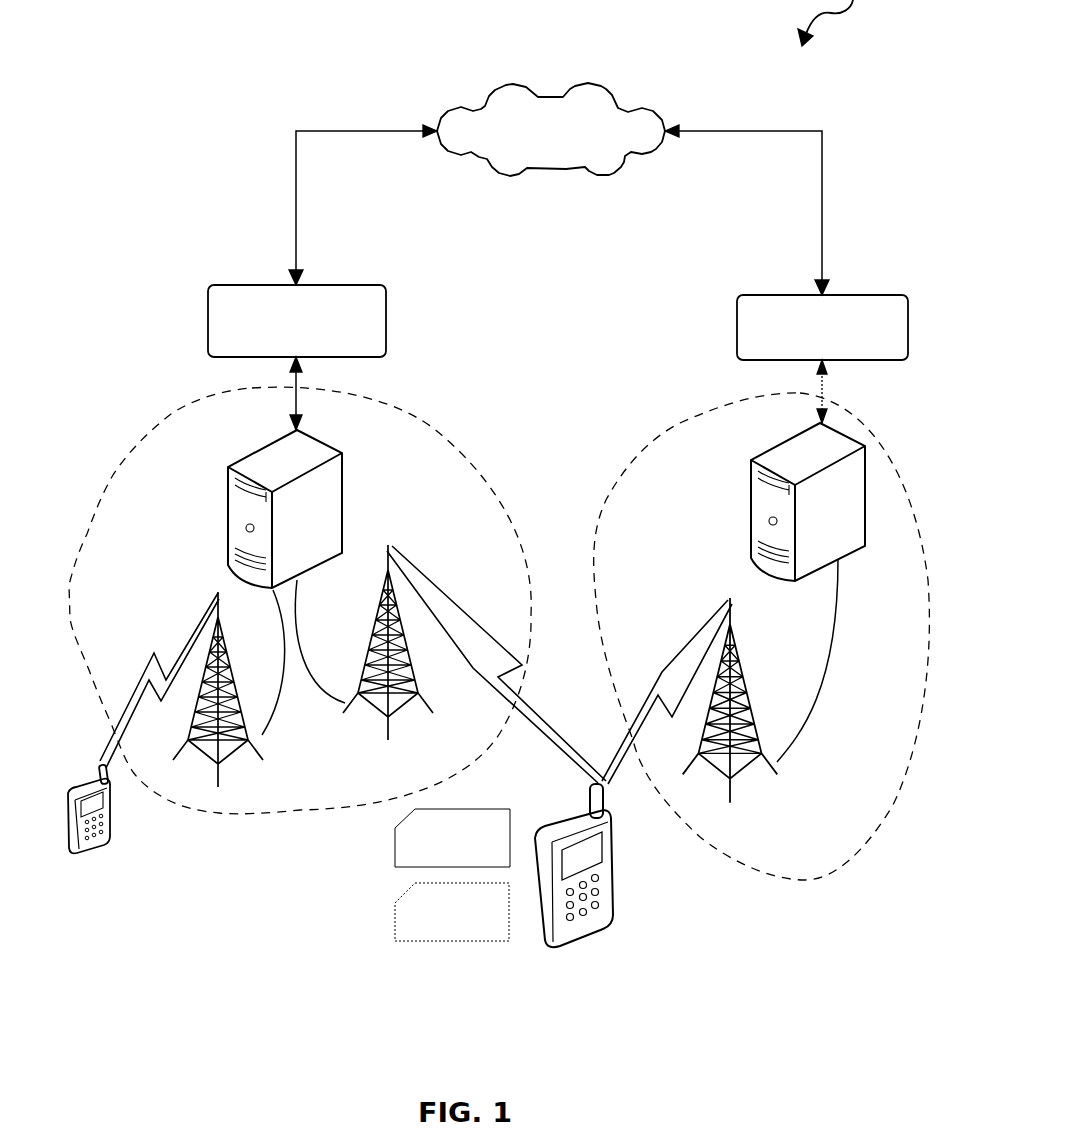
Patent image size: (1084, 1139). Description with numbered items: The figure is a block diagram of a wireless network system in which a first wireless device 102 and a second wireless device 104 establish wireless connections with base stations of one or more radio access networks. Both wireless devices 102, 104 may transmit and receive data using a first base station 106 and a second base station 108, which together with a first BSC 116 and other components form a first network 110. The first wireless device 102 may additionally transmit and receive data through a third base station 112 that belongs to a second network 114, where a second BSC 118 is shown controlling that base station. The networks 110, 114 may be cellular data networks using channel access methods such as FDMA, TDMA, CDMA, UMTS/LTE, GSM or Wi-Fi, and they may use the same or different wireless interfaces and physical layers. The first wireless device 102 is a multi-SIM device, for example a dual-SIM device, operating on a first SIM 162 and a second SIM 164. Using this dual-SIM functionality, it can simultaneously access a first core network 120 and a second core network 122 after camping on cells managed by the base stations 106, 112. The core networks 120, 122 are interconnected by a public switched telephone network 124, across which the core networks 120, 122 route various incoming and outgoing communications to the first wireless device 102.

The first wireless device 102 is at (617, 883).
The second wireless device 104 is at (88, 850).
The first base station 106 is at (383, 747).
The second base station 108 is at (222, 768).
The first network 110 is at (436, 435).
The third base station 112 is at (748, 757).
The second network 114 is at (680, 423).
The first BSC 116 is at (228, 511).
The second BSC 118 is at (752, 508).
The first core network 120 is at (208, 320).
The second core network 122 is at (737, 325).
The public switched telephone network (PSTN) 124 is at (583, 85).
The first SIM 162 is at (395, 847).
The second SIM 164 is at (395, 912).